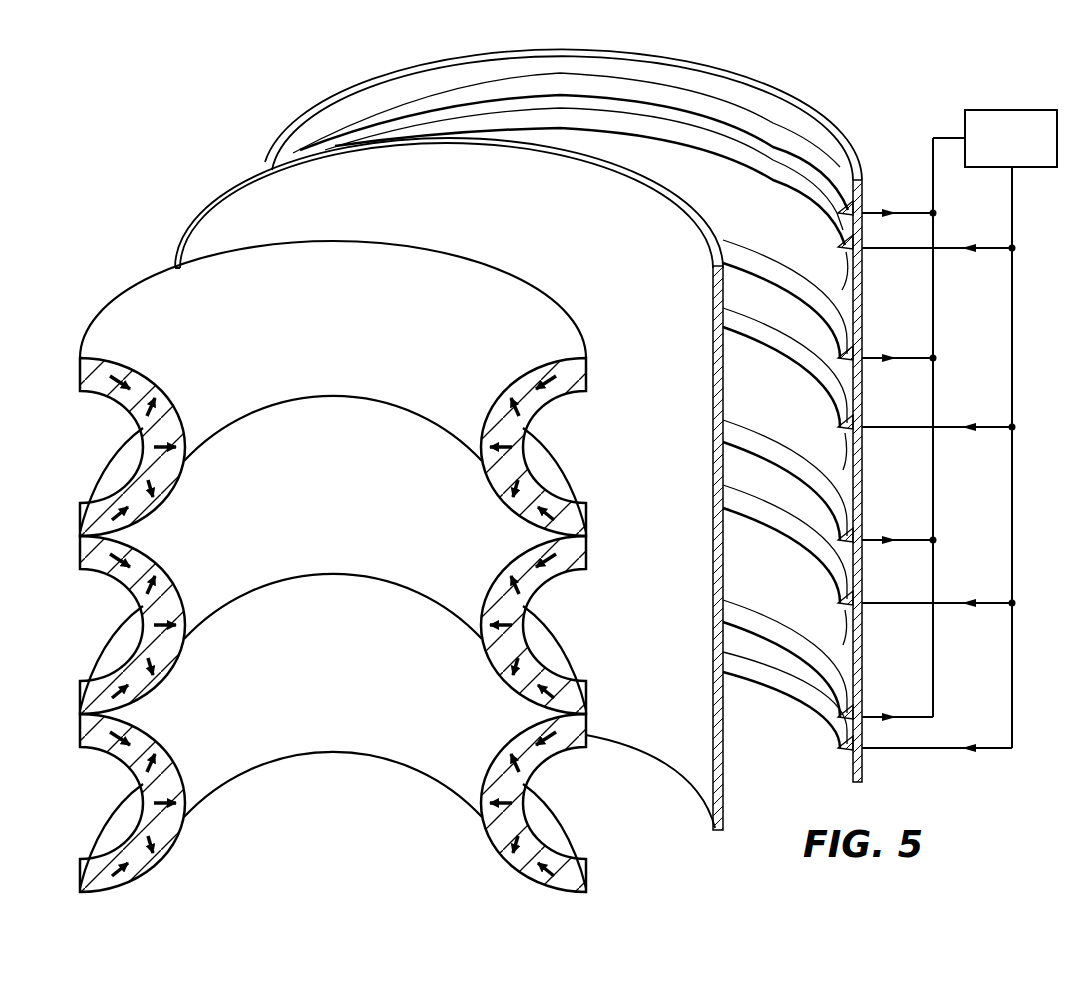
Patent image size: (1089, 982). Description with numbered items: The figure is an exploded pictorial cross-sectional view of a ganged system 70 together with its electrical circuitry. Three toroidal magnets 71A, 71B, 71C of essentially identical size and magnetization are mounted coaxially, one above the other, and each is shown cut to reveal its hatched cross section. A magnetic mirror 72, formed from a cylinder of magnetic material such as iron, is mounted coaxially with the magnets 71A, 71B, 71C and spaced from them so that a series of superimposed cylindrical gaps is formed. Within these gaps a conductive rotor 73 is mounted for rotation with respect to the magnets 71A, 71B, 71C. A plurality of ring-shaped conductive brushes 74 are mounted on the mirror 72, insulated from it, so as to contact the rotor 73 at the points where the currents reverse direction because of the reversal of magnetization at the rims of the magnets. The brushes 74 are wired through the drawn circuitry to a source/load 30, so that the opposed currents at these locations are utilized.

The ganged system 70 is at (343, 80).
The toroidal magnet 71A is at (352, 343).
The toroidal magnet 71B is at (352, 522).
The toroidal magnet 71C is at (352, 700).
The magnetic mirror 72 is at (753, 212).
The conductive rotor 73 is at (574, 251).
The ring-shaped conductive brushes 74 is at (815, 153).
The source/load 30 is at (1029, 110).